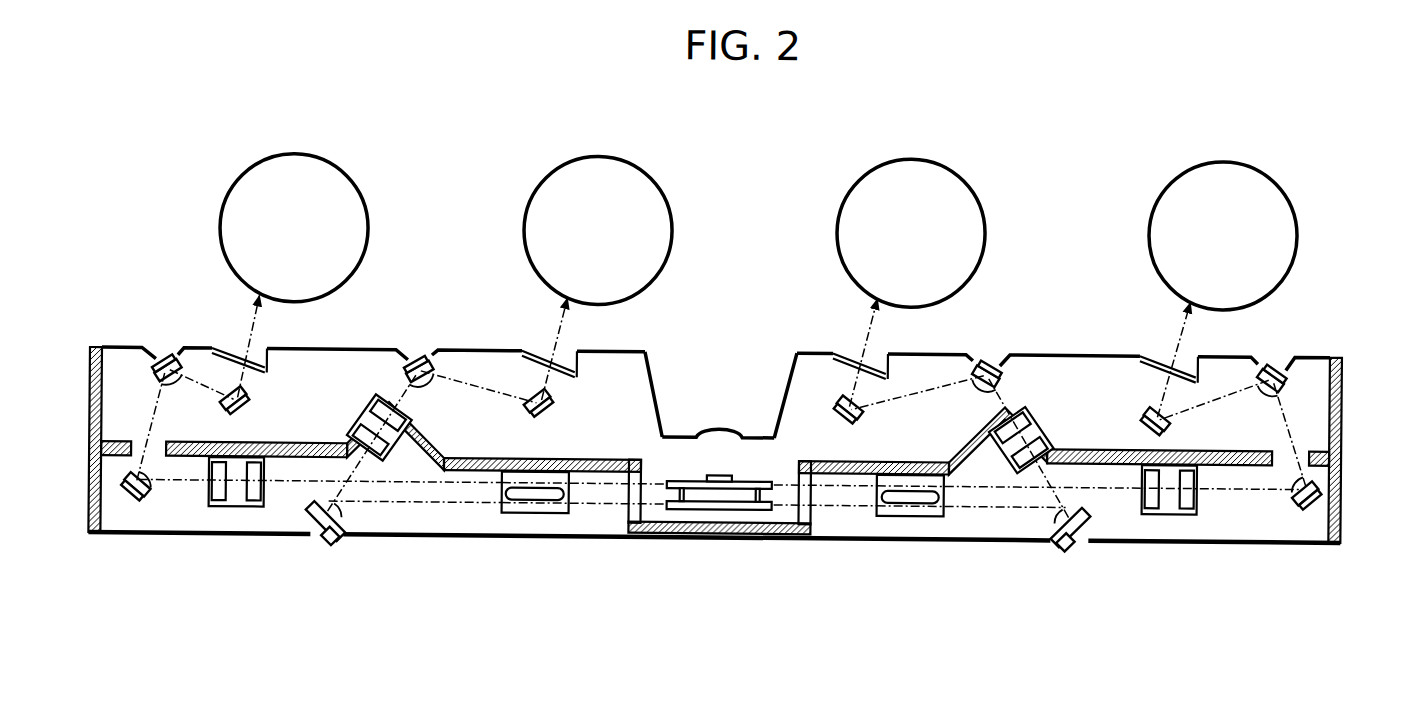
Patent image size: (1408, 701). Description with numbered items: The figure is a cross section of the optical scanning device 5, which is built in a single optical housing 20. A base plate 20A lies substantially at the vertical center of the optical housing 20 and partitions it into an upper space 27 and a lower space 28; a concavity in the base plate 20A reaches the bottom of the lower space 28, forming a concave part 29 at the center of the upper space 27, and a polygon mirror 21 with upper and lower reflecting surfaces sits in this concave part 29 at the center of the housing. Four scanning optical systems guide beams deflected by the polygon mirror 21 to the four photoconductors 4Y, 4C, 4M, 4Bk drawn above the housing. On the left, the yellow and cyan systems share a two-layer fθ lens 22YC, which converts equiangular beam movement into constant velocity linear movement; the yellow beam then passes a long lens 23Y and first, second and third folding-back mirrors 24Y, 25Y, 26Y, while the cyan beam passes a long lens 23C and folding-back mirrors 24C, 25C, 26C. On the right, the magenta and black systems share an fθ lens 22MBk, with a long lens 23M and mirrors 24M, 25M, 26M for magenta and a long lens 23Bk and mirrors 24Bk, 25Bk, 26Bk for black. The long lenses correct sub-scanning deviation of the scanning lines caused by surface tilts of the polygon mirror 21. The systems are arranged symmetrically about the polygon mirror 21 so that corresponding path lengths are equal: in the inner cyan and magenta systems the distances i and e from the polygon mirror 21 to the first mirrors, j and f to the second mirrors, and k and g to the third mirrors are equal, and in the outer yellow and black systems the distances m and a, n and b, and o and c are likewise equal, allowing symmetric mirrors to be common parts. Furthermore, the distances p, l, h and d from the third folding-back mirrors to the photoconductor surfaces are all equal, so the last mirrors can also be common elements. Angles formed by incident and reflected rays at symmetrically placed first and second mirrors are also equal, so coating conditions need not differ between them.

The photoconductor 4Y is at (350, 176).
The photoconductor 4C is at (655, 176).
The photoconductor 4M is at (968, 178).
The photoconductor 4Bk is at (1280, 180).
The optical scanning device 5 is at (250, 607).
The optical housing 20 is at (1342, 428).
The base plate 20A is at (1193, 440).
The polygon mirror 21 is at (712, 502).
The fθ lens 22YC is at (535, 507).
The fθ lens 22MBk is at (915, 507).
The long lens 23Y is at (236, 506).
The long lens 23C is at (370, 420).
The long lens 23M is at (1028, 408).
The long lens 23Bk is at (1165, 506).
The first folding-back mirror 24Y is at (148, 500).
The first folding-back mirror 24C is at (323, 548).
The first folding-back mirror 24M is at (1053, 542).
The first folding-back mirror 24Bk is at (1307, 505).
The second folding-back mirror 25Y is at (158, 354).
The second folding-back mirror 25C is at (437, 361).
The second folding-back mirror 25M is at (1000, 350).
The second folding-back mirror 25Bk is at (1280, 352).
The third folding-back mirror 26Y is at (245, 412).
The third folding-back mirror 26C is at (528, 418).
The third folding-back mirror 26M is at (866, 401).
The third folding-back mirror 26Bk is at (1140, 407).
The upper space 27 is at (796, 385).
The lower space 28 is at (840, 522).
The concave part 29 is at (676, 440).
The distance a is at (1243, 481).
The distance b is at (1284, 420).
The distance c is at (1242, 380).
The distance d is at (1160, 385).
The distance e is at (990, 502).
The distance f is at (1003, 393).
The distance g is at (933, 380).
The distance h is at (853, 386).
The distance i is at (600, 502).
The distance j is at (405, 392).
The distance k is at (472, 386).
The distance l is at (552, 376).
The distance m is at (283, 483).
The distance n is at (155, 426).
The distance o is at (192, 377).
The distance p is at (244, 378).